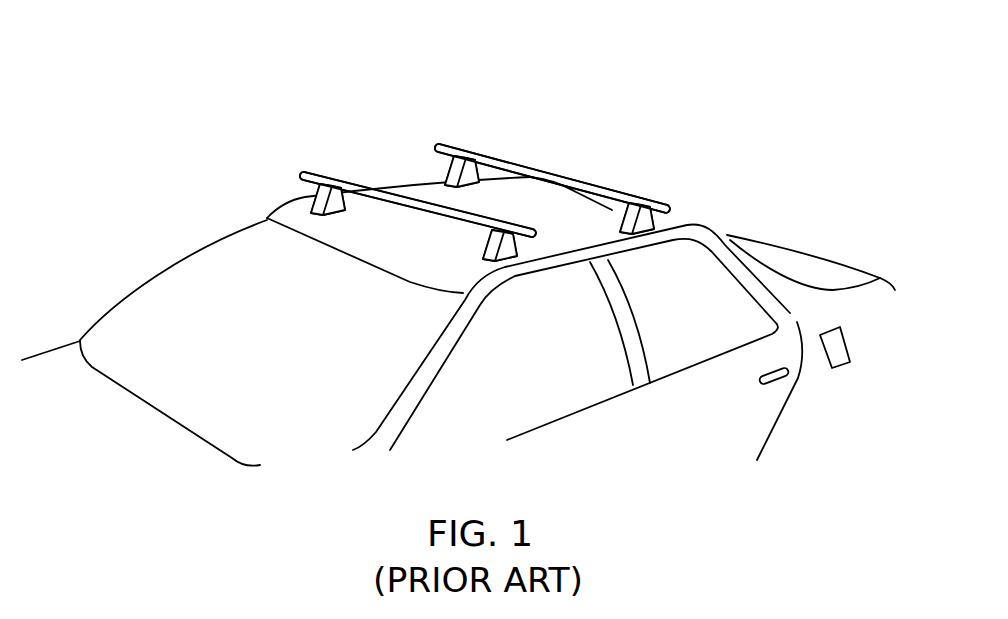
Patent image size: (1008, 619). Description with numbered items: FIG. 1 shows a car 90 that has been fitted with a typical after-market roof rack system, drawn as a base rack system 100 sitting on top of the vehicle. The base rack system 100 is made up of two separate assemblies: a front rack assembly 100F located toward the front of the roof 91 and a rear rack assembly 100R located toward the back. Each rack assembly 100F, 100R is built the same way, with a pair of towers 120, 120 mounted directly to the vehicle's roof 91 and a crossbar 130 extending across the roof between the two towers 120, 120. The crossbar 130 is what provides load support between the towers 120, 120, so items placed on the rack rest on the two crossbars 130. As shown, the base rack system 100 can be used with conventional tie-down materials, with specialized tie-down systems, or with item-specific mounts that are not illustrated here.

The car 90 is at (467, 306).
The roof 91 is at (433, 193).
The base rack system 100 is at (491, 177).
The front rack assembly 100F is at (294, 137).
The rear rack assembly 100R is at (436, 106).
The tower 120 is at (316, 197).
The crossbar 130 is at (356, 186).